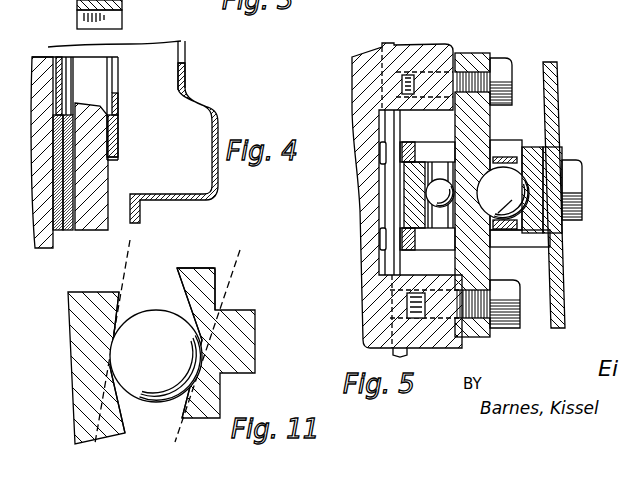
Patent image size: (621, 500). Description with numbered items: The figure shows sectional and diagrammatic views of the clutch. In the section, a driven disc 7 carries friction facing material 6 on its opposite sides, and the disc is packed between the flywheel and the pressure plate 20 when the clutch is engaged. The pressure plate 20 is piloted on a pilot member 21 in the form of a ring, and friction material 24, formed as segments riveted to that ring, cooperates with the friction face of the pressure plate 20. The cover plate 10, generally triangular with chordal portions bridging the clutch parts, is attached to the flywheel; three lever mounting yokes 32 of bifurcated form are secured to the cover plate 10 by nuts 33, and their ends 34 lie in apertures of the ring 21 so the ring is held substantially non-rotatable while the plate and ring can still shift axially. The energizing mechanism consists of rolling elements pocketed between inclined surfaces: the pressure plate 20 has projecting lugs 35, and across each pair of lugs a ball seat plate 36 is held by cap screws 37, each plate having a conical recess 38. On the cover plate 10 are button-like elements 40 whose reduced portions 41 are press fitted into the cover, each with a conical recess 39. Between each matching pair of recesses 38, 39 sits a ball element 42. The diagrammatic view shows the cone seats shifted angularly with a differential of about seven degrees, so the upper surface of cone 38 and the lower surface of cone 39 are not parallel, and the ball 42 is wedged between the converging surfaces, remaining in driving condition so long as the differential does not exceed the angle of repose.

In FIG. 4, the friction facing material 6 is at (43, 63).
In FIG. 4, the disc 7 is at (58, 69).
In FIG. 4, the cover plate 10 is at (183, 78).
In FIG. 5, the cover plate 10 is at (555, 72).
In FIG. 4, the pressure plate 20 is at (100, 190).
In FIG. 4, the pilot member 21 is at (117, 100).
In FIG. 5, the pilot member 21 is at (393, 268).
In FIG. 4, the friction material 24 is at (113, 133).
In FIG. 5, the lever mounting yokes 32 is at (507, 147).
In FIG. 5, the nuts 33 is at (580, 203).
In FIG. 5, the ends 34 is at (382, 235).
In FIG. 5, the projecting lugs 35 is at (433, 53).
In FIG. 11, the ball seat plate 36 is at (88, 375).
In FIG. 5, the ball seat plate 36 is at (460, 55).
In FIG. 5, the cap screws 37 is at (502, 70).
In FIG. 11, the recess 38 is at (115, 317).
In FIG. 5, the recess 38 is at (492, 247).
In FIG. 11, the conical recess 39 is at (190, 298).
In FIG. 5, the conical recess 39 is at (524, 160).
In FIG. 11, the button-like elements 40 is at (195, 275).
In FIG. 5, the button-like elements 40 is at (555, 187).
In FIG. 11, the reduced portions 41 is at (243, 337).
In FIG. 5, the reduced portions 41 is at (556, 186).
In FIG. 11, the ball elements 42 is at (152, 323).
In FIG. 5, the ball elements 42 is at (551, 212).